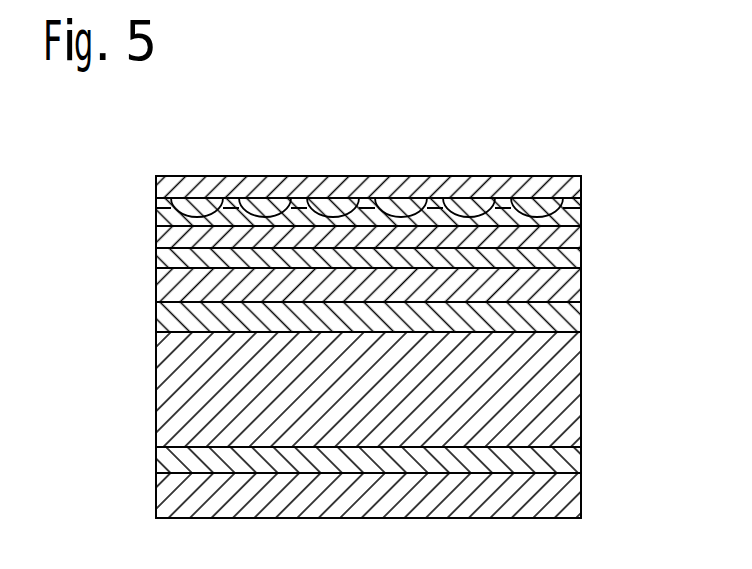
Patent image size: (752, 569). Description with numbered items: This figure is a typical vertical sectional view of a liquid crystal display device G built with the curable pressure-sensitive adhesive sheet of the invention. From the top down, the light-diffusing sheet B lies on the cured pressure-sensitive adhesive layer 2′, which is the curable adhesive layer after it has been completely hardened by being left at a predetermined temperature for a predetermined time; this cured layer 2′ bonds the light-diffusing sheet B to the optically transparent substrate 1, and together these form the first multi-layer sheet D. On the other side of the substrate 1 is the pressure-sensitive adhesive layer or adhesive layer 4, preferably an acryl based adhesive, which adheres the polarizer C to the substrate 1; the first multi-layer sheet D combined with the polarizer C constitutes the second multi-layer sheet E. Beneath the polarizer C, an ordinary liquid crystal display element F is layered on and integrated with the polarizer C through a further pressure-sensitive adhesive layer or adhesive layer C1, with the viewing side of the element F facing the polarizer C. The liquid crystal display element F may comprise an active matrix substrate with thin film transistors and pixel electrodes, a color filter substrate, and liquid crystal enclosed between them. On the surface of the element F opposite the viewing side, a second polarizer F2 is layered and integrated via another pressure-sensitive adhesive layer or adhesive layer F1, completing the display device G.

The display device G is at (557, 171).
The second multi-layer sheet E is at (663, 335).
The first multi-layer sheet D is at (145, 268).
The light-diffusing sheet B is at (581, 187).
The cured pressure-sensitive adhesive layer 2′ is at (581, 217).
The optically transparent substrate 1 is at (581, 241).
The pressure-sensitive adhesive layer or adhesive layer 4 is at (581, 262).
The polarizer C is at (581, 287).
The pressure-sensitive adhesive layer or adhesive layer C1 is at (581, 320).
The liquid crystal display element F is at (578, 390).
The pressure-sensitive adhesive layer or adhesive layer F1 is at (576, 463).
The polarizer F2 is at (576, 495).